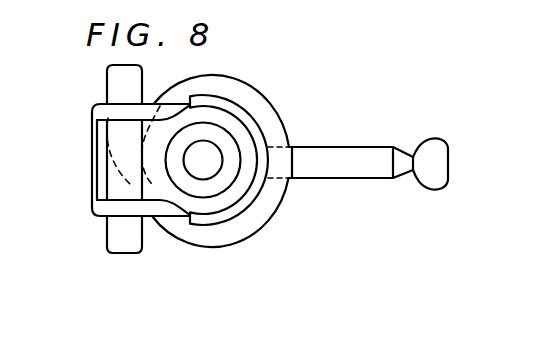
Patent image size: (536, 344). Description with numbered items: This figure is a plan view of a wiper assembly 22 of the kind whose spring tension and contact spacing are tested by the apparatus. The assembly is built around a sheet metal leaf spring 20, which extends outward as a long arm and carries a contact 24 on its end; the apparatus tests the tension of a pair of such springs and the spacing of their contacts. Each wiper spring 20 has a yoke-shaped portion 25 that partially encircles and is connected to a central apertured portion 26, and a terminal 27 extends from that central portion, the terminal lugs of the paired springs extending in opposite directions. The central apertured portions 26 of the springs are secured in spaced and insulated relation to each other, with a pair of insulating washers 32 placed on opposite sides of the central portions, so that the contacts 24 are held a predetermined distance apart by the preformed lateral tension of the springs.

The leaf spring 20 is at (324, 179).
The wiper assembly 22 is at (277, 221).
The contact 24 is at (449, 160).
The yoke-shaped portion 25 is at (256, 120).
The central apertured portion 26 is at (243, 223).
The terminal 27 is at (132, 78).
The insulating washer 32 is at (228, 152).